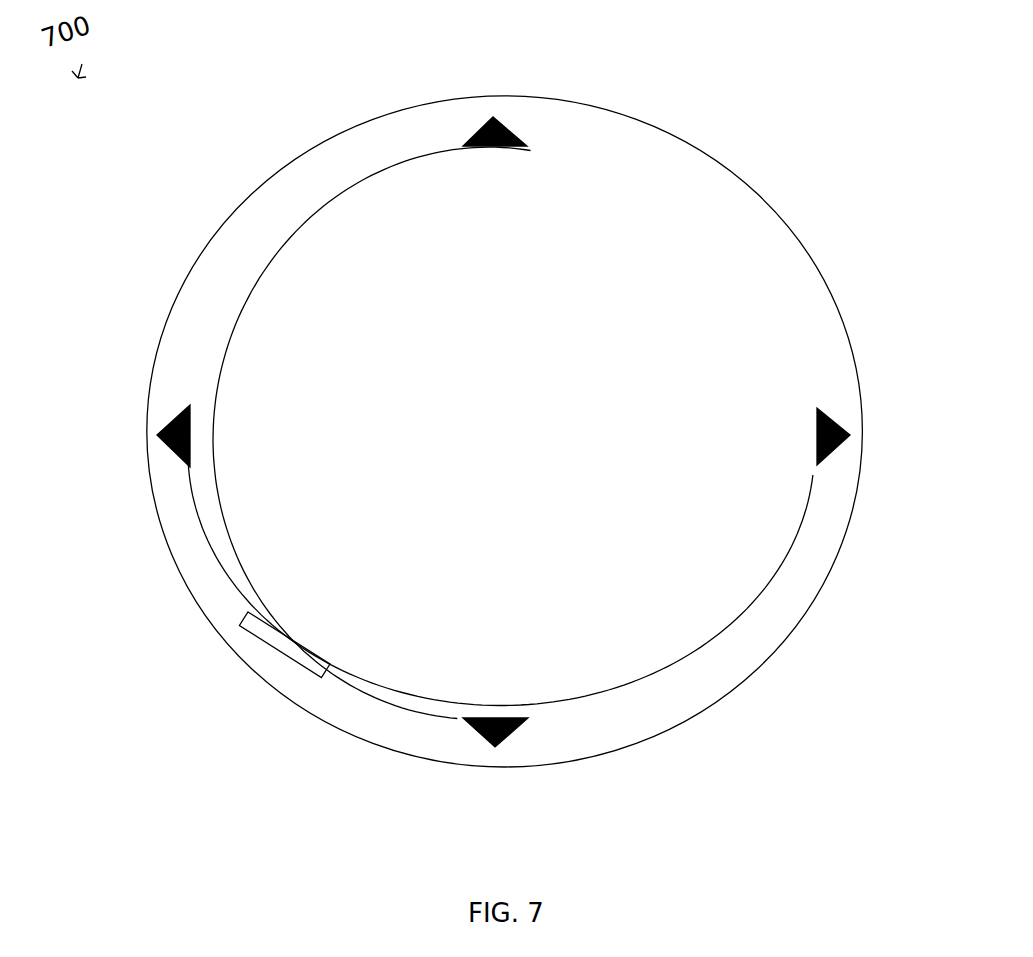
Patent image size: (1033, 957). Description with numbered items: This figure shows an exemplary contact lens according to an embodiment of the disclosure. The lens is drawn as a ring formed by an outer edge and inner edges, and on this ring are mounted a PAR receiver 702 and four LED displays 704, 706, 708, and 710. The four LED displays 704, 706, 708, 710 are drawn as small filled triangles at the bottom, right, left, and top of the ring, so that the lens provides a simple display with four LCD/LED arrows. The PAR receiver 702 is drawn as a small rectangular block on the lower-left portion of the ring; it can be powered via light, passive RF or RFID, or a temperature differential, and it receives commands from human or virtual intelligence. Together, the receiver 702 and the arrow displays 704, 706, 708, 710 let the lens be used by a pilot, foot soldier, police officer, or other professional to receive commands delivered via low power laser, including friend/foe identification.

The PAR receiver 702 is at (253, 643).
The LED display 704 is at (495, 747).
The LED display 706 is at (850, 435).
The LED display 708 is at (157, 435).
The LED display 710 is at (493, 117).